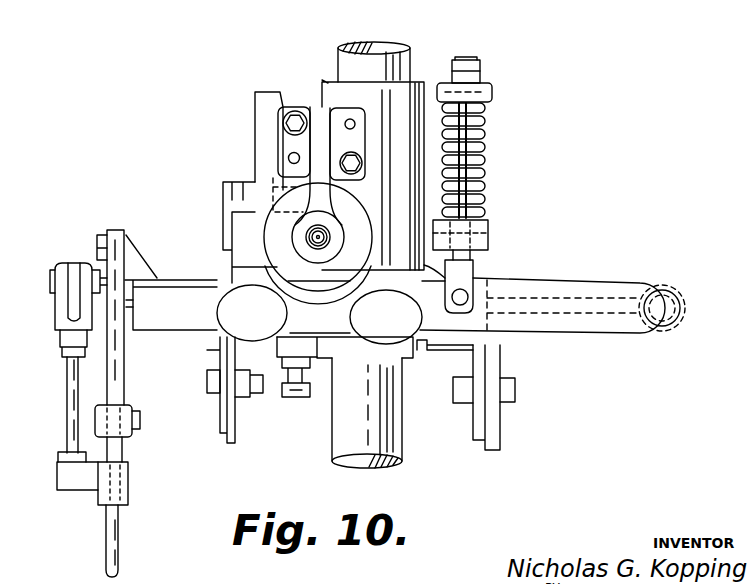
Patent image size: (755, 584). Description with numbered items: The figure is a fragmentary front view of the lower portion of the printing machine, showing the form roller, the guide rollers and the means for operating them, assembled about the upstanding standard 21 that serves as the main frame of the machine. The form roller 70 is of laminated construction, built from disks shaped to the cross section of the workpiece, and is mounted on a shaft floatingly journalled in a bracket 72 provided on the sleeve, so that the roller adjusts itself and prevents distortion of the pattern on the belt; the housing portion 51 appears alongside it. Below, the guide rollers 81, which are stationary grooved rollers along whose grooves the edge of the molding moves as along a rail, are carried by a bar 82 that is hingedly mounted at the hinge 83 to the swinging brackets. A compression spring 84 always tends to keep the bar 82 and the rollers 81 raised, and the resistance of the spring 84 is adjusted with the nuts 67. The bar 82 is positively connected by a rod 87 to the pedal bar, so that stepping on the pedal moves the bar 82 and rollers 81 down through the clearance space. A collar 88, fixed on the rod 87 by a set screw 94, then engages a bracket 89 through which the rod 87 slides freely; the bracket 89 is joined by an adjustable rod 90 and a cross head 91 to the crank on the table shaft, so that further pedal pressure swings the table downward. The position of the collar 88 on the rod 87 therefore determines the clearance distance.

The standard 21 is at (411, 52).
The housing block 51 is at (326, 85).
The nuts 67 is at (473, 72).
The compression spring 84 is at (480, 147).
The bracket 72 is at (313, 141).
The form roller 70 is at (296, 198).
The hinge 83 is at (667, 303).
The bar 82 is at (158, 326).
The guide rollers 81 is at (258, 336).
The cross head 91 is at (62, 317).
The adjustable rod 90 is at (70, 413).
The set screw 94 is at (137, 416).
The collar 88 is at (132, 432).
The bracket 89 is at (122, 480).
The rod 87 is at (115, 526).